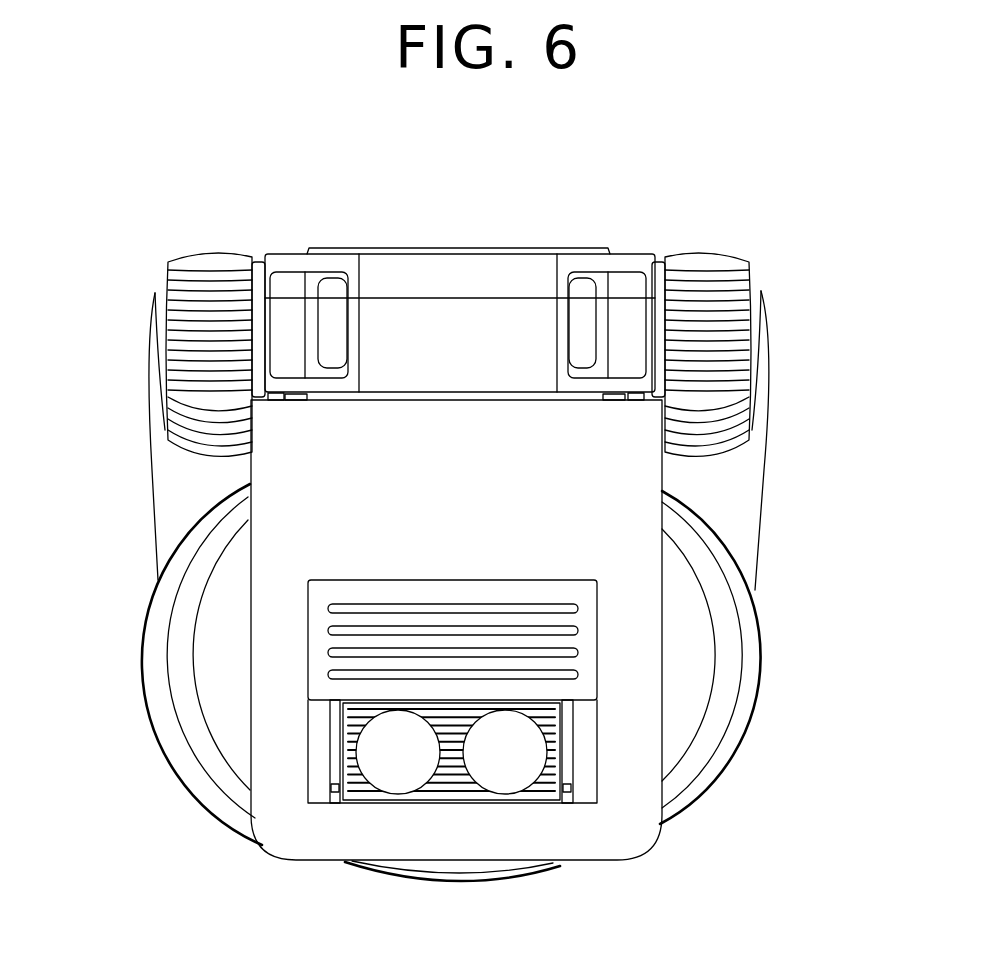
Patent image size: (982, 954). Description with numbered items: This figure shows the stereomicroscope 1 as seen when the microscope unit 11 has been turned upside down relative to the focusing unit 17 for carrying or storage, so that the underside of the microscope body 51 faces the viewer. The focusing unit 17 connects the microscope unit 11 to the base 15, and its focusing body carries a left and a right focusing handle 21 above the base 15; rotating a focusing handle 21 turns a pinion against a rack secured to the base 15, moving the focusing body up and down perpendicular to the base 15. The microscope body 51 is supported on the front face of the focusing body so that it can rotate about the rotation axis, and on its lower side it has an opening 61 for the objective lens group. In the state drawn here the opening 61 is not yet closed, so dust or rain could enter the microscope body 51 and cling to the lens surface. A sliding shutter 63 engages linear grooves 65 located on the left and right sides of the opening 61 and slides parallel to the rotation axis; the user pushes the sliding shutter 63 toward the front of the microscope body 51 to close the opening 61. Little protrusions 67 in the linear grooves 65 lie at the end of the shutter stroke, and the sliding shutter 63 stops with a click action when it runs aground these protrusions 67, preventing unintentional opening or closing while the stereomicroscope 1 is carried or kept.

The stereomicroscope 1 is at (722, 212).
The microscope unit 11 is at (179, 802).
The base 15 is at (763, 508).
The focusing unit 17 is at (488, 240).
The focusing handles 21 is at (172, 339).
The microscope body 51 is at (645, 660).
The opening 61 is at (390, 775).
The sliding shutter 63 is at (318, 645).
The linear grooves 65 is at (332, 745).
The protrusions 67 is at (331, 790).